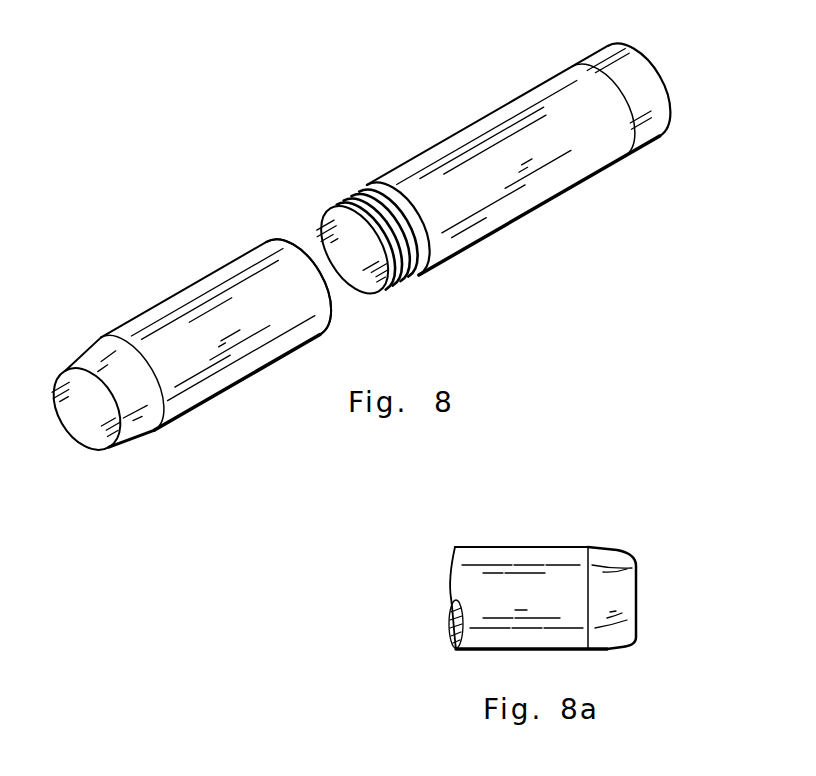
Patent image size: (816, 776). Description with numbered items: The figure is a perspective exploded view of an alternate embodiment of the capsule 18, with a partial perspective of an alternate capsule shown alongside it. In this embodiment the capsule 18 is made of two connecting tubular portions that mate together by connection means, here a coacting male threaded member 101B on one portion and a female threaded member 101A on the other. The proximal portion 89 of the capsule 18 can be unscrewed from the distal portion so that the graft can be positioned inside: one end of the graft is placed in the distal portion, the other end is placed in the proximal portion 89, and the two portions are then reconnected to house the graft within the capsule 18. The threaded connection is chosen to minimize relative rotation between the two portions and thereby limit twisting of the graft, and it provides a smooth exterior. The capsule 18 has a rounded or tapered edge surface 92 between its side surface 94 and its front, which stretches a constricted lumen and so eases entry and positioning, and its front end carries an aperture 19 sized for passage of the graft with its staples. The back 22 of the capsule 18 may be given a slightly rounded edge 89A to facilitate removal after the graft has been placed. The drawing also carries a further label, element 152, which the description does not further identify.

In FIG. 8, the capsule 18 is at (298, 149).
In FIG. 8, the aperture 19 is at (60, 407).
In FIG. 8, the back 22 is at (668, 98).
In FIG. 8A, the back 22 is at (636, 608).
In FIG. 8, the proximal portion 89 is at (197, 368).
In FIG. 8A, the slightly rounded edge 89A is at (627, 552).
In FIG. 8, the tapered edge surface 92 is at (78, 358).
In FIG. 8, the side surface 94 is at (174, 296).
In FIG. 8, the female threaded member 101A is at (278, 236).
In FIG. 8, the male threaded member 101B is at (395, 292).
In FIG. 8, the cylindrical body 152 is at (488, 134).
In FIG. 8A, the cylindrical body 152 is at (499, 553).